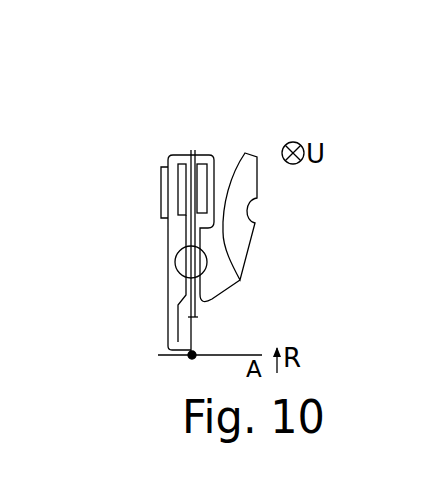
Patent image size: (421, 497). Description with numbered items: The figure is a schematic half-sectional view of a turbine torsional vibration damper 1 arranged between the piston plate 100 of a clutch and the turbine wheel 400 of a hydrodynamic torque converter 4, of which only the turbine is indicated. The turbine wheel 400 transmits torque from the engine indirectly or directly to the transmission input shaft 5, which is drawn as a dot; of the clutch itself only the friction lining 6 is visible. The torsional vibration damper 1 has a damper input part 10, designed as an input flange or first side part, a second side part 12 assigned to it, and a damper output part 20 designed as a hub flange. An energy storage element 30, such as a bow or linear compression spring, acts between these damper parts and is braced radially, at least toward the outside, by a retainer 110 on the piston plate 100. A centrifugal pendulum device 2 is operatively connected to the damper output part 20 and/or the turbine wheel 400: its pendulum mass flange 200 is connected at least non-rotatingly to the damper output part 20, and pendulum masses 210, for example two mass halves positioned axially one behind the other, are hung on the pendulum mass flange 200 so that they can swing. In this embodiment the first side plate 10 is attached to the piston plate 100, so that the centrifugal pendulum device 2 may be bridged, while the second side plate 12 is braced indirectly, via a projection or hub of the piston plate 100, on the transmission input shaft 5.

The torsional vibration damper 1 is at (178, 300).
The centrifugal pendulum device 2 is at (219, 157).
The hydrodynamic torque converter 4 is at (278, 222).
The transmission input shaft 5 is at (175, 358).
The friction lining 6 is at (165, 195).
The damper input part 10 is at (241, 280).
The second side part 12 is at (176, 265).
The damper output part 20 is at (207, 263).
The energy storage element 30 is at (206, 250).
The piston plate 100 is at (167, 222).
The retainer 110 is at (178, 244).
The pendulum mass flange 200 is at (190, 155).
The pendulum masses 210 is at (203, 177).
The turbine wheel 400 is at (229, 186).